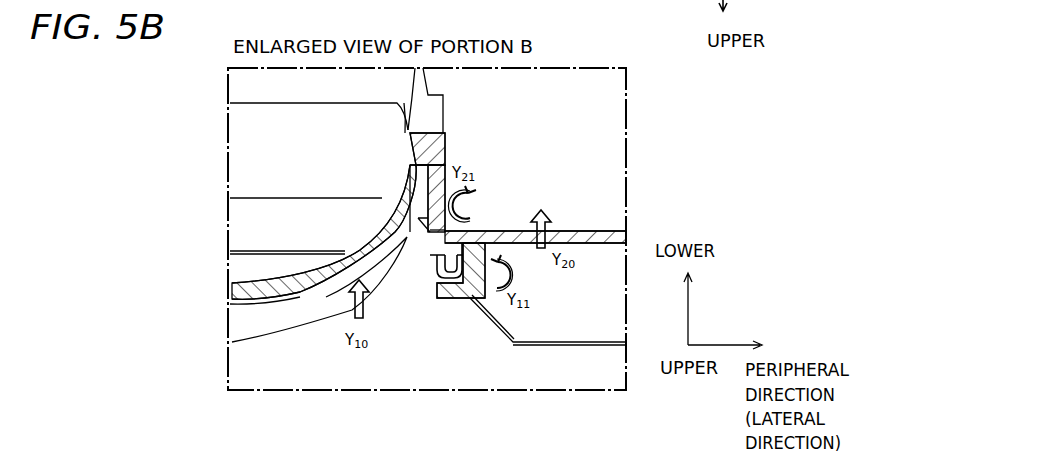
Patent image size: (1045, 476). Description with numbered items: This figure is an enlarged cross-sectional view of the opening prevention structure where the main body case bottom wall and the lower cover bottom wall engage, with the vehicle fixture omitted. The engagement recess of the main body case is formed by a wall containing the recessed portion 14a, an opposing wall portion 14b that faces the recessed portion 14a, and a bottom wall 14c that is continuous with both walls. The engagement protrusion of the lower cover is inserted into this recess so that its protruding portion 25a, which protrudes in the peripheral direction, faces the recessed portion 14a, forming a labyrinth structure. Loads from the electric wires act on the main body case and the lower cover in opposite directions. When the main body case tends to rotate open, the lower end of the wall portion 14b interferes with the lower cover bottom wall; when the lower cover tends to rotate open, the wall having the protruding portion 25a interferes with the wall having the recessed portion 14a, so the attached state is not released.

The protruding portion 25a is at (413, 262).
The recessed portion 14a is at (433, 268).
The wall portion 14b is at (512, 343).
The bottom wall 14c is at (462, 298).